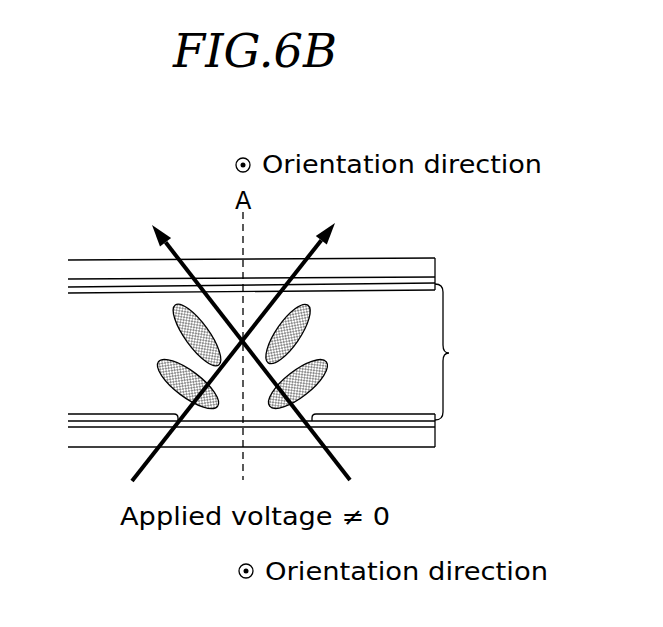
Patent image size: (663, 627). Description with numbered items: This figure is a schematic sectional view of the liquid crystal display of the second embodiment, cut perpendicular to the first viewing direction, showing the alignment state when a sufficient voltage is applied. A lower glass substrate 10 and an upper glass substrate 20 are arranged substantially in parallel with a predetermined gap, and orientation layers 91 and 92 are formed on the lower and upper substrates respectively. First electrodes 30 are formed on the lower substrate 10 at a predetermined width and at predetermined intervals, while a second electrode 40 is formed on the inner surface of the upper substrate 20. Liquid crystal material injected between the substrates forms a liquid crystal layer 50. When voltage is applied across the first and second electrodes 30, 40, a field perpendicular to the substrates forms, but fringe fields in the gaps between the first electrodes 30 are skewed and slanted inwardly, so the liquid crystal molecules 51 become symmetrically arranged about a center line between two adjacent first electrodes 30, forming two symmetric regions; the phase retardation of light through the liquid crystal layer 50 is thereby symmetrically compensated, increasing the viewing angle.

The lower glass substrate 10 is at (278, 456).
The upper glass substrate 20 is at (275, 253).
The first electrode 30 is at (441, 431).
The second electrode 40 is at (441, 267).
The liquid crystal layer 50 is at (319, 388).
The liquid crystal molecules 51 is at (277, 407).
The orientation layer 91 is at (122, 414).
The orientation layer 92 is at (108, 289).